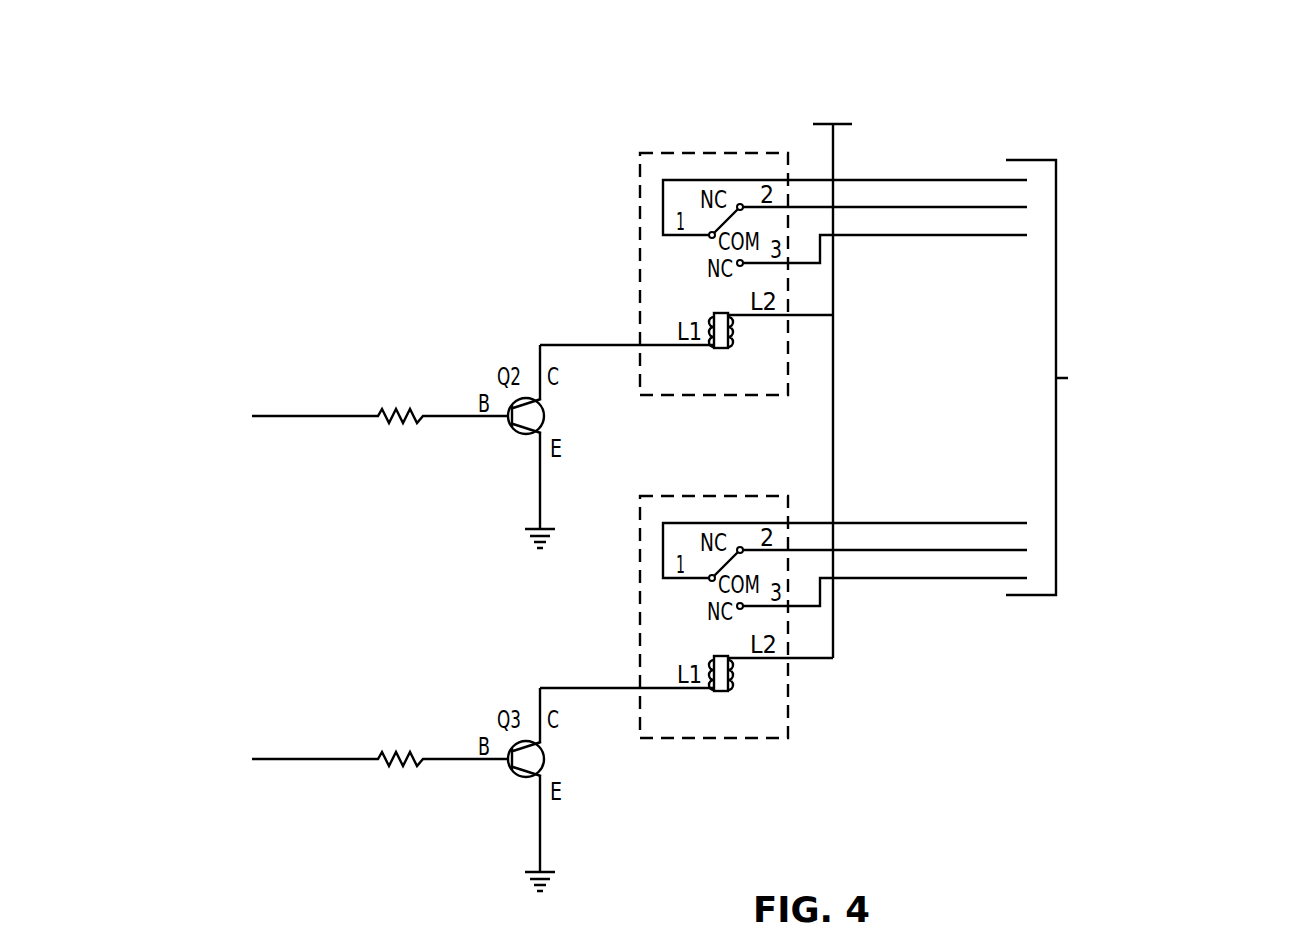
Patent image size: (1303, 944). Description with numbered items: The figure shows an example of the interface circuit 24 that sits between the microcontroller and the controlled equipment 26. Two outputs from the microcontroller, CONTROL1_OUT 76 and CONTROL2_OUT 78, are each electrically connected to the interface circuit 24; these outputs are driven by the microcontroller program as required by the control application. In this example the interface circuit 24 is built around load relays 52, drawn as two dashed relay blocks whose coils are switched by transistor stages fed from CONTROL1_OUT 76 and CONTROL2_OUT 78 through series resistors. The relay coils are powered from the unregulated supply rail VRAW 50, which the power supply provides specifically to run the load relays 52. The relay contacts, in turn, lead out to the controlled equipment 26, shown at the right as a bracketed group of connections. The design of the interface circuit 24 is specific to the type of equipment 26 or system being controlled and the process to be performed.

The interface circuit 24 is at (769, 485).
The controlled equipment 26 is at (1187, 334).
The VRAW 50 is at (874, 94).
The load relays 52 is at (640, 272).
The CONTROL1_OUT 76 is at (134, 385).
The CONTROL2_OUT 78 is at (144, 736).